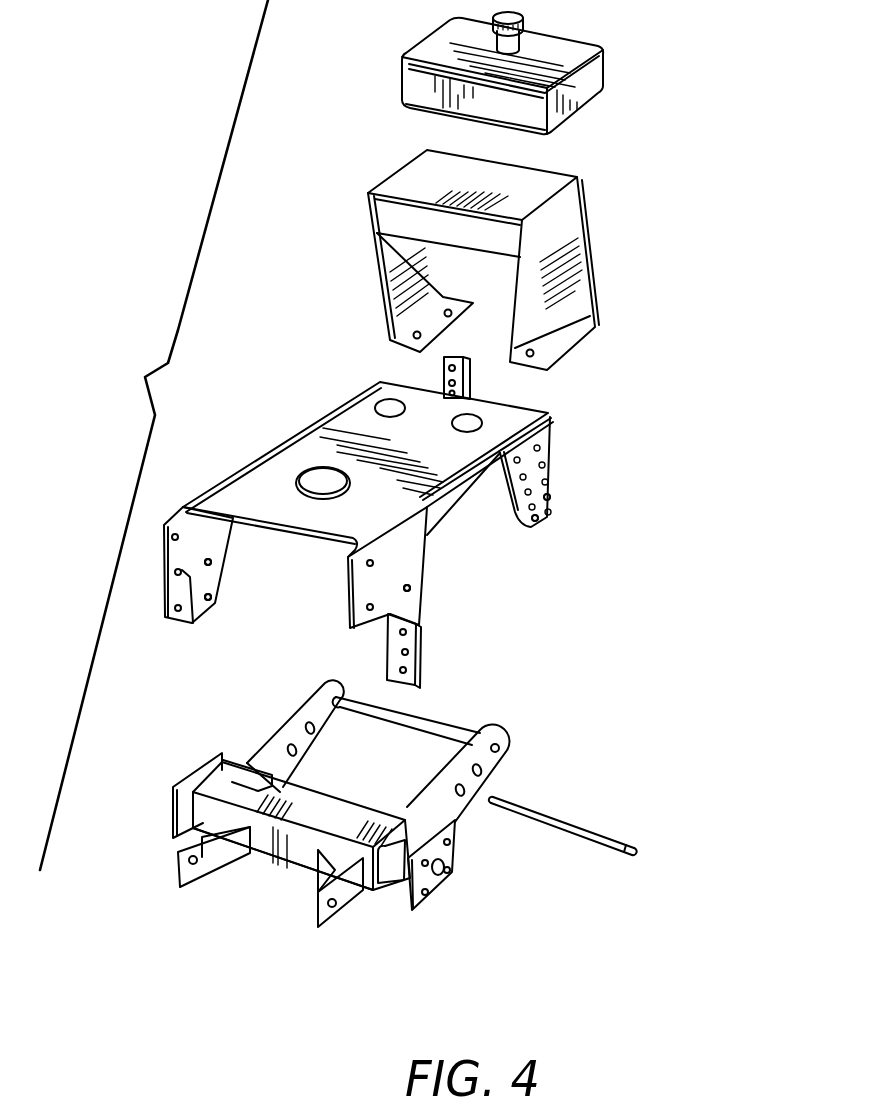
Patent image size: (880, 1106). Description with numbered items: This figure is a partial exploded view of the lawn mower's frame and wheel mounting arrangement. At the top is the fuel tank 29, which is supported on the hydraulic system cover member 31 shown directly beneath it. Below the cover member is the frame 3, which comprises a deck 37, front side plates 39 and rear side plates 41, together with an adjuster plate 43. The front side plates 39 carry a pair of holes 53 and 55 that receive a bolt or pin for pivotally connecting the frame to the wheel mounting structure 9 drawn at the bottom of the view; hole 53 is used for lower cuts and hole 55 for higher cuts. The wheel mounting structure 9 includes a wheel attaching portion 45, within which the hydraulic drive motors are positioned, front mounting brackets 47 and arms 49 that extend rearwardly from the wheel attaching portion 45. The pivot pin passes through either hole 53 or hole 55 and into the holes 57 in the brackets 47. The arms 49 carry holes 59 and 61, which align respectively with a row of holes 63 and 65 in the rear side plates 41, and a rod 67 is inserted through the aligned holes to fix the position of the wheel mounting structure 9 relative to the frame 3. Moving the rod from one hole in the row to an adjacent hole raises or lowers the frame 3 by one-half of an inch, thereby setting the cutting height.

The frame 3 is at (262, 472).
The wheel mounting structure 9 is at (383, 796).
The fuel tank 29 is at (430, 38).
The hydraulic system cover member 31 is at (373, 228).
The deck 37 is at (462, 493).
The front side plates 39 is at (217, 580).
The rear side plates 41 is at (543, 450).
The adjuster plate 43 is at (442, 375).
The wheel attaching portion 45 is at (200, 777).
The front mounting brackets 47 is at (405, 883).
The arms 49 is at (293, 717).
The hole 53 is at (208, 562).
The hole 55 is at (217, 603).
The holes 57 is at (198, 863).
The holes 59 is at (317, 725).
The holes 61 is at (297, 752).
The row of holes 63 is at (543, 510).
The row of holes 65 is at (532, 527).
The rod 67 is at (593, 847).